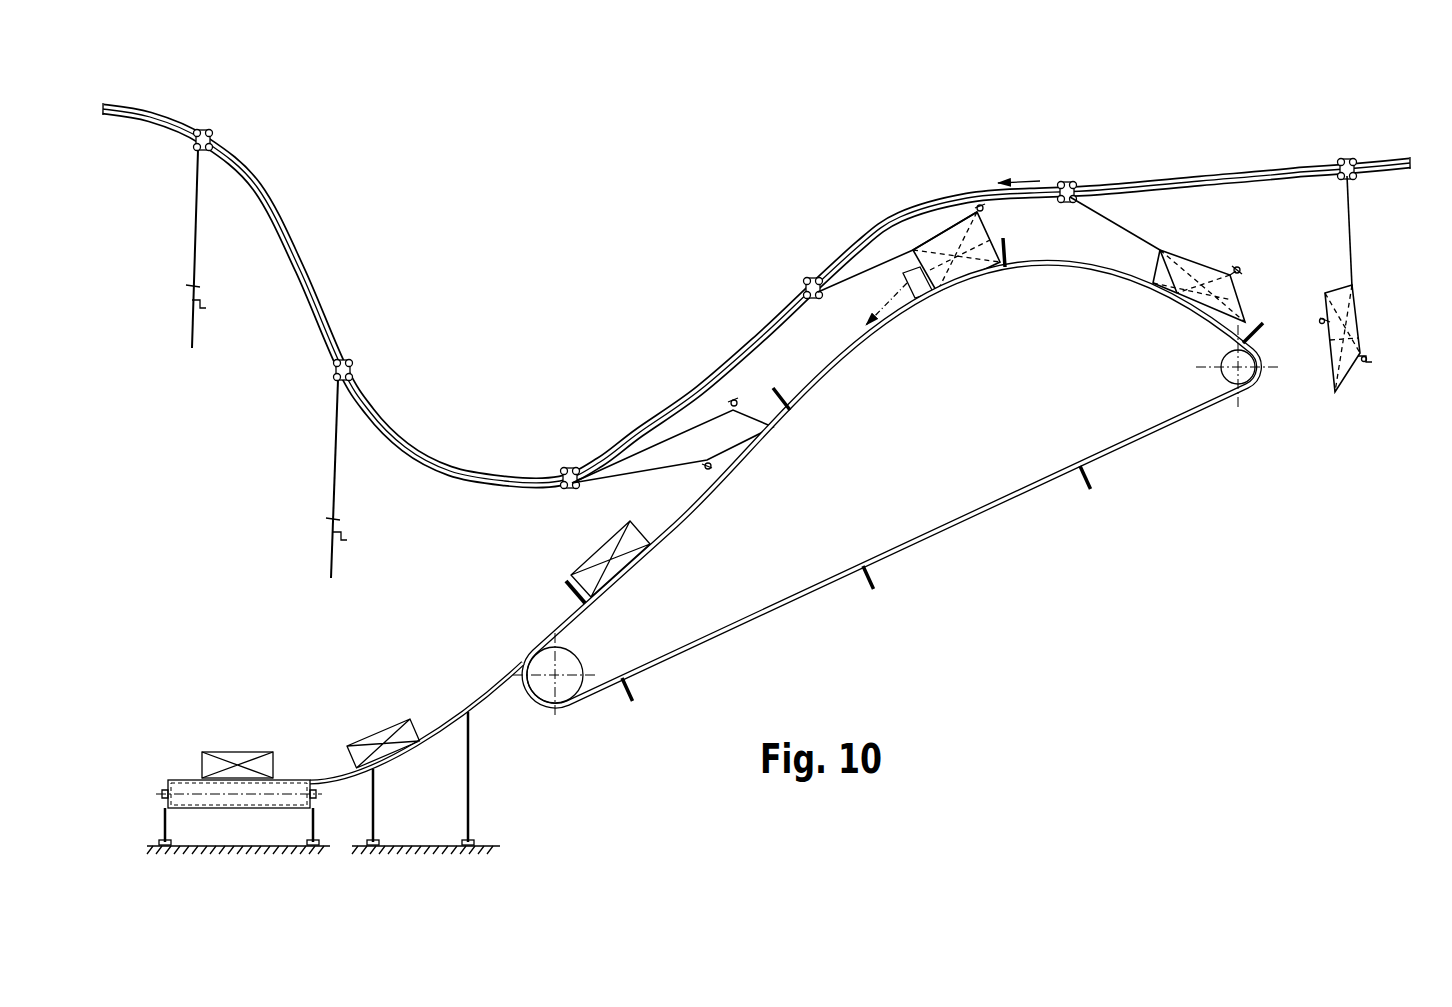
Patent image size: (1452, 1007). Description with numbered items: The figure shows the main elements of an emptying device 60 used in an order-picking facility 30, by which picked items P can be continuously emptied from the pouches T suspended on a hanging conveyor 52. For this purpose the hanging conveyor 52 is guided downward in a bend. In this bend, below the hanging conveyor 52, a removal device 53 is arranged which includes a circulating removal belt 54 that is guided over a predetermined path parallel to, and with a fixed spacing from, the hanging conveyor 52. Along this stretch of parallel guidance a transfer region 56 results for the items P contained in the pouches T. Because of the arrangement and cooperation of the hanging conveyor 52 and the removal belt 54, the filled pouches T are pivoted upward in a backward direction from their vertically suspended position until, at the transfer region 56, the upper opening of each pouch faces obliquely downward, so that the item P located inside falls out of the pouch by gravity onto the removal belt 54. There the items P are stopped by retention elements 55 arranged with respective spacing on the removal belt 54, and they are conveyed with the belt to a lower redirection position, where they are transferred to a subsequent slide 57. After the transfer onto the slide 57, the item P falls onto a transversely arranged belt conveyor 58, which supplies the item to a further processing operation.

The order-picking facility 30 is at (432, 123).
The hanging conveyor 52 is at (1147, 176).
The removal device 53 is at (882, 459).
The removal belt 54 is at (910, 542).
The retention elements 55 is at (1096, 492).
The transfer region 56 is at (886, 282).
The slide 57 is at (477, 698).
The belt conveyor 58 is at (170, 727).
The emptying device 60 is at (578, 270).
The pouches T is at (208, 337).
The items P is at (1367, 322).